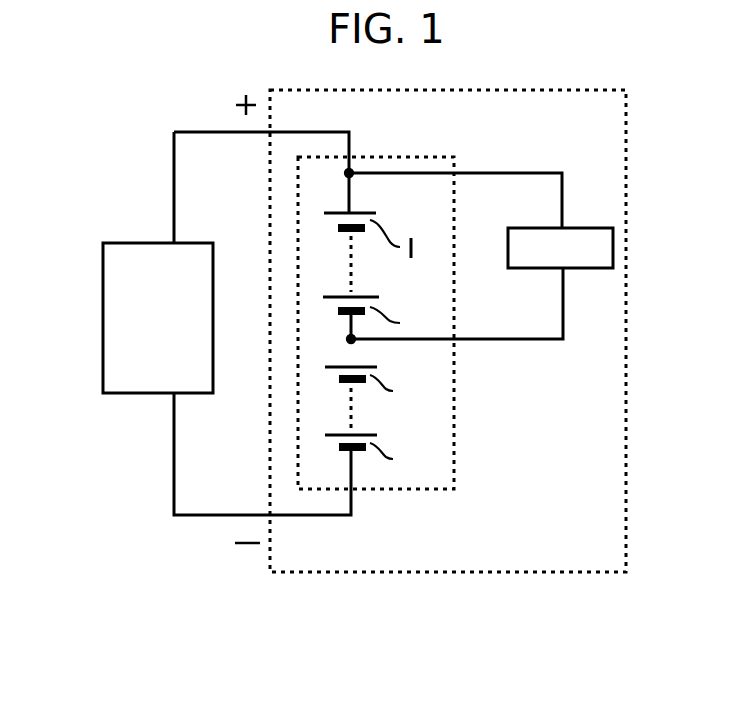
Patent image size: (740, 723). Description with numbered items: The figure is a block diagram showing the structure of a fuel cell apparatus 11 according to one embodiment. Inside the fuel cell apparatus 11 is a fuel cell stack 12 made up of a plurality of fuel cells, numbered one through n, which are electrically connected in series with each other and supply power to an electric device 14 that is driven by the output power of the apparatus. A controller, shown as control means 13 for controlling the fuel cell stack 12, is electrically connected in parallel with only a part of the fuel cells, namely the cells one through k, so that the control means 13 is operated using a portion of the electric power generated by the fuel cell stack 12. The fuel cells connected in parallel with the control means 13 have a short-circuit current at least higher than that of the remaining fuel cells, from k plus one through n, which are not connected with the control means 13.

The fuel cell apparatus 11 is at (533, 572).
The fuel cell stack 12 is at (388, 489).
The control means 13 is at (590, 228).
The electric device 14 is at (132, 243).